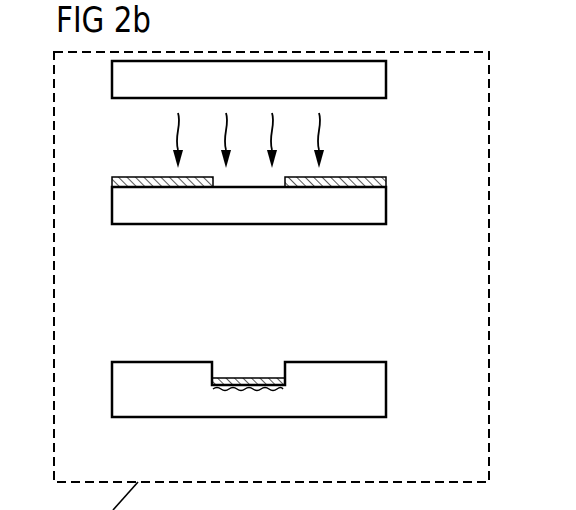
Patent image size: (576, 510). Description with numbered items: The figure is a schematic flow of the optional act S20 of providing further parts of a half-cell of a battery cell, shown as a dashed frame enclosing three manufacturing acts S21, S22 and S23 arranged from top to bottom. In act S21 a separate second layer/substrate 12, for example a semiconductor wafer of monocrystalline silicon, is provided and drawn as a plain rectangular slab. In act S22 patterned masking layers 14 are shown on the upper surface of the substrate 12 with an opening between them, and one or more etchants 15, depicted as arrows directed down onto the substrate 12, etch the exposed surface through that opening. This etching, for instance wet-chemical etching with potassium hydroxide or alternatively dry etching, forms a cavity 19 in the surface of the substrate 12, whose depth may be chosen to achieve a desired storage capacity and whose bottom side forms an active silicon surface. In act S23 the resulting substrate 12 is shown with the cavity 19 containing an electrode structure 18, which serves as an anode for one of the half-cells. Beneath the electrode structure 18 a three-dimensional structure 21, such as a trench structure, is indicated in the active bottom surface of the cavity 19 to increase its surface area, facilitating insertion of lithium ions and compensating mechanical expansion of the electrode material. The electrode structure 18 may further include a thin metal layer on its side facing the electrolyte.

The second layer/substrate 12 is at (114, 79).
The masking layer 14 is at (114, 182).
The etchant 15 is at (344, 133).
The electrode structure 18 is at (256, 377).
The cavity 19 is at (224, 348).
The three-dimensional structure 21 is at (286, 390).
The act of providing further parts of the half-cells S20 is at (489, 260).
The manufacturing act S21 is at (402, 80).
The manufacturing act S22 is at (402, 198).
The manufacturing act S23 is at (402, 385).